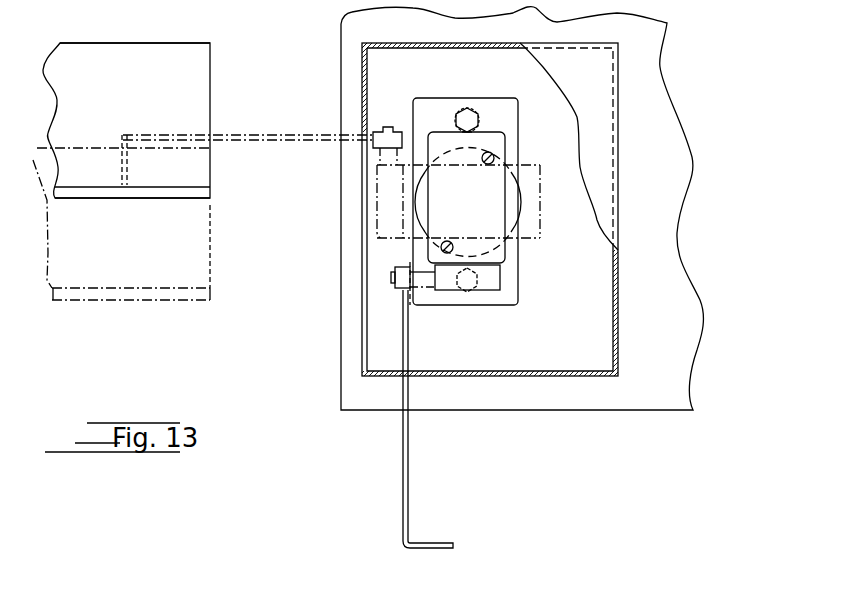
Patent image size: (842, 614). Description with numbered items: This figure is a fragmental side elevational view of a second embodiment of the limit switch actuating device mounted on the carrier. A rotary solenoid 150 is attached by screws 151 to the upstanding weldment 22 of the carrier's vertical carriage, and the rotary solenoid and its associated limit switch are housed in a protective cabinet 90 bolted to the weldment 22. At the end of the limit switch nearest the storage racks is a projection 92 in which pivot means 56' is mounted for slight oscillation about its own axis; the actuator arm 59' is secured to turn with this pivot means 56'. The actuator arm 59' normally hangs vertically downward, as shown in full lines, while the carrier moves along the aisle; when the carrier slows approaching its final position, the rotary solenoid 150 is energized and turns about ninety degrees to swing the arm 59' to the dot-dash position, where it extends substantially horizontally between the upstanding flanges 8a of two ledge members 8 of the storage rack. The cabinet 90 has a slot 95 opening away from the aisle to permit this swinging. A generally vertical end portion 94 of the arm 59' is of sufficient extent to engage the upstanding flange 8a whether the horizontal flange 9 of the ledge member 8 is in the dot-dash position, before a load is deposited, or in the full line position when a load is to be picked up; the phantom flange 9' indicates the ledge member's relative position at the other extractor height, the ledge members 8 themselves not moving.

The ledge member 8 is at (212, 79).
The upstanding flange 8a is at (136, 45).
The horizontal flange 9 is at (132, 209).
The door in open position (phantom) 9' is at (131, 313).
The weldment 22 is at (545, 411).
The pivot means 56' is at (448, 187).
The actuator arm 59' is at (288, 325).
The cabinet 90 is at (535, 377).
The projection 92 is at (382, 240).
The end portion 94 is at (128, 160).
The slot 95 is at (366, 132).
The rotary solenoid 150 is at (510, 174).
The screws 151 is at (470, 118).